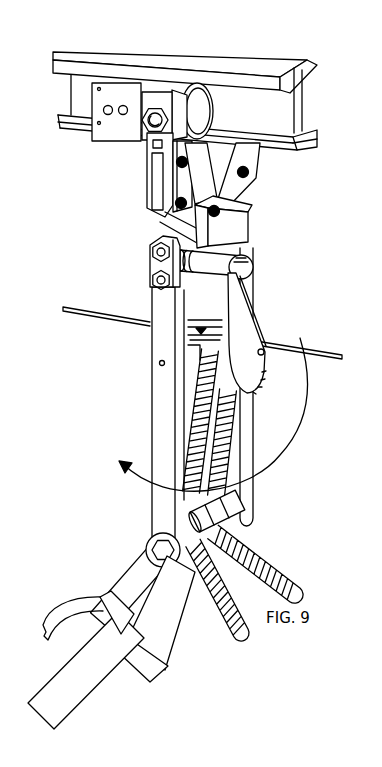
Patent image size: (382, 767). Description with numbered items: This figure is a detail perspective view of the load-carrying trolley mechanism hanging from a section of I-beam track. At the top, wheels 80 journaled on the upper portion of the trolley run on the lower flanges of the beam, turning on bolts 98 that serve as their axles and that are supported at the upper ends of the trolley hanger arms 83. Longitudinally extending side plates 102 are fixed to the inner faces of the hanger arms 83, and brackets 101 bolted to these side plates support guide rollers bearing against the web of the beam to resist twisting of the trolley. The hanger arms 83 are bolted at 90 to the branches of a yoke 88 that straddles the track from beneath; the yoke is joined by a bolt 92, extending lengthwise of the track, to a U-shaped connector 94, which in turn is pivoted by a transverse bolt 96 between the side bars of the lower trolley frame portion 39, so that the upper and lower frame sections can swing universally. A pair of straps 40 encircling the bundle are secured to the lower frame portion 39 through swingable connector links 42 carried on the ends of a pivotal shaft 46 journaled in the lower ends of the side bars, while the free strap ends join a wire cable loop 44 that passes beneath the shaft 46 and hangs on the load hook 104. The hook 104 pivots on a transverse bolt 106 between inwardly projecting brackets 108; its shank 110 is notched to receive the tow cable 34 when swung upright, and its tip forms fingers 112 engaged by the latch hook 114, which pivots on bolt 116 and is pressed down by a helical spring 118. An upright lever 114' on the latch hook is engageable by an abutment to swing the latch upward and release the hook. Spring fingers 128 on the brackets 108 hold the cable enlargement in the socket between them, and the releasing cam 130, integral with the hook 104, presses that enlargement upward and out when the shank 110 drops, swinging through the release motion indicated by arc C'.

The tow cable 34 is at (313, 351).
The lower trolley frame portion 39 is at (151, 366).
The straps 40 is at (105, 696).
The swingable connector links 42 is at (143, 548).
The wire cable loop 44 is at (236, 430).
The pivotal shaft 46 is at (242, 524).
The wheels 80 is at (207, 100).
The trolley hanger arms 83 is at (145, 205).
The yoke 88 is at (237, 197).
The bolts 90 is at (177, 180).
The bolt 92 is at (250, 209).
The U-shaped connector 94 is at (242, 230).
The bolt 96 is at (152, 256).
The bolts 98 is at (148, 144).
The brackets 101 is at (110, 104).
The side plates 102 is at (99, 143).
The load hook 104 is at (265, 370).
The pivot bolt 106 is at (151, 389).
The brackets 108 is at (222, 328).
The hook shank 110 is at (258, 312).
The fingers 112 is at (203, 306).
The latch hook 114 is at (279, 279).
The upright lever 114' is at (122, 240).
The bolt 116 is at (152, 283).
The helical spring 118 is at (152, 269).
The spring fingers 128 is at (193, 340).
The tow cable releasing cam 130 is at (190, 394).
The arc of movement C' is at (184, 472).